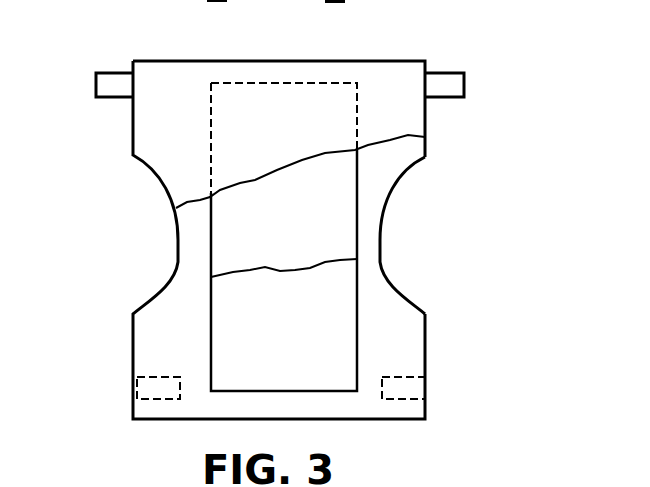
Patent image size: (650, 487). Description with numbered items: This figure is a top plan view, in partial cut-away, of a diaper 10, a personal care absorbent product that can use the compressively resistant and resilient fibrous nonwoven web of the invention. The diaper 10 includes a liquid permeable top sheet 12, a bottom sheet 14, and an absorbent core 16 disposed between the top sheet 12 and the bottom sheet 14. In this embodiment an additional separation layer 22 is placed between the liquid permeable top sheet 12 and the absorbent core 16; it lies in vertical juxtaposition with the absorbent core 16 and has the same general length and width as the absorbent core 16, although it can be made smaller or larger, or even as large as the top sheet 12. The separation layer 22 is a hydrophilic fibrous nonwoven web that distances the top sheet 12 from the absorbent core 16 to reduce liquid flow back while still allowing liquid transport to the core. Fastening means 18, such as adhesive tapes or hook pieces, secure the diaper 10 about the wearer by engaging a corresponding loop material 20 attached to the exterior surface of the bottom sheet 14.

The diaper 10 is at (382, 40).
The liquid permeable top sheet 12 is at (194, 137).
The bottom sheet 14 is at (388, 312).
The absorbent core 16 is at (309, 338).
The fastening means 18 is at (112, 82).
The loop material 20 is at (158, 396).
The separation layer 22 is at (312, 224).